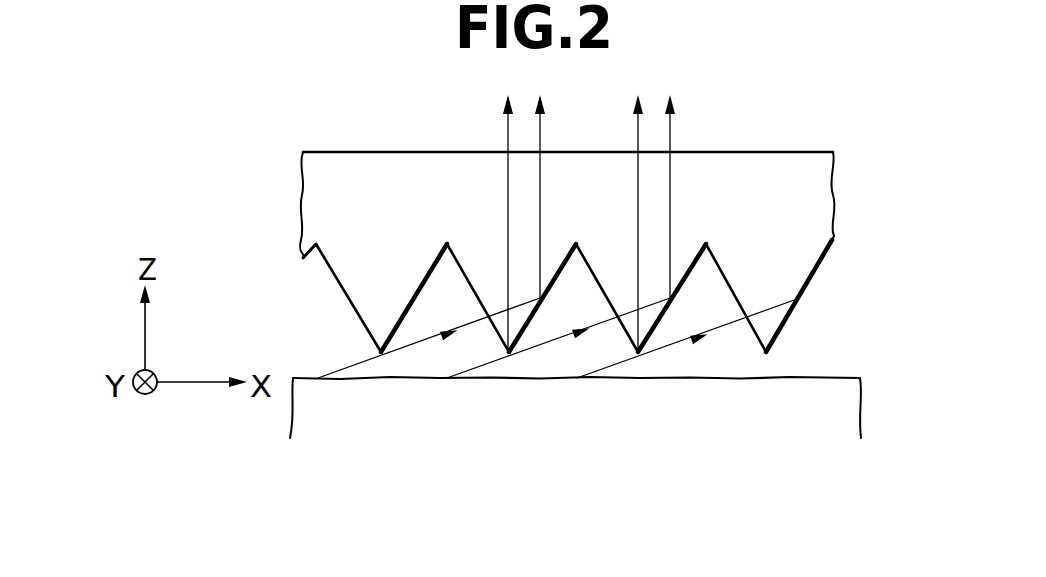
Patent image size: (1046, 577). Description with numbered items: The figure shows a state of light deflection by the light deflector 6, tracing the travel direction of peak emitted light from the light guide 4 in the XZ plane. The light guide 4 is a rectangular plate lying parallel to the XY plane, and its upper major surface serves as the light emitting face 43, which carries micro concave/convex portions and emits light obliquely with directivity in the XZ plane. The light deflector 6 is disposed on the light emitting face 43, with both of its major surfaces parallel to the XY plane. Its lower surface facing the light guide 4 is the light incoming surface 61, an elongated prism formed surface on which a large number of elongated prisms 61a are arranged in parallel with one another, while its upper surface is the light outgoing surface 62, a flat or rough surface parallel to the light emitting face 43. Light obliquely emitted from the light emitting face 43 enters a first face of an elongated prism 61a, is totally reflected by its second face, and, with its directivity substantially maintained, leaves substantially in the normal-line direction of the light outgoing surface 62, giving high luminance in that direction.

The light guide 4 is at (607, 381).
The light emitting face 43 is at (813, 376).
The light deflector 6 is at (583, 219).
The light incoming surface 61 is at (580, 296).
The elongated prism 61a is at (795, 272).
The light outgoing surface 62 is at (784, 150).